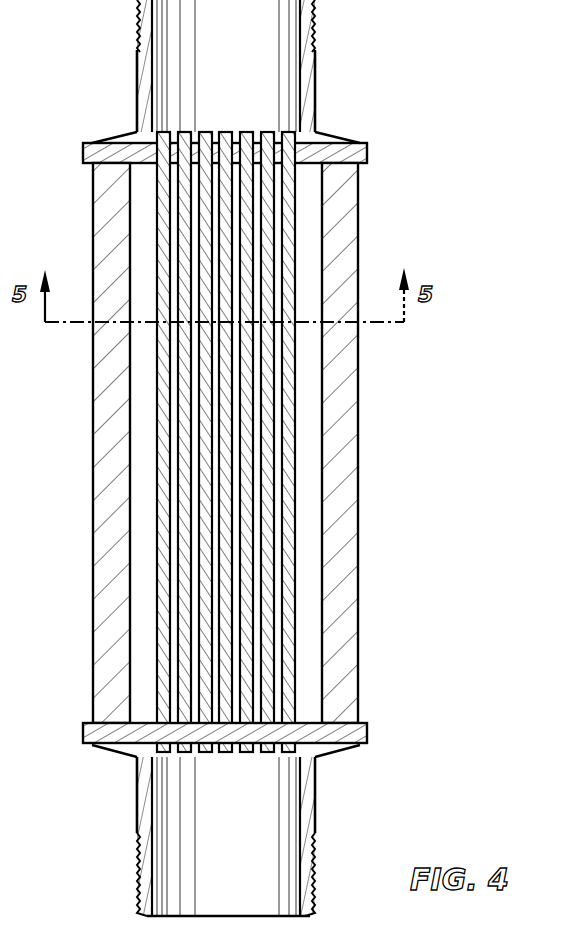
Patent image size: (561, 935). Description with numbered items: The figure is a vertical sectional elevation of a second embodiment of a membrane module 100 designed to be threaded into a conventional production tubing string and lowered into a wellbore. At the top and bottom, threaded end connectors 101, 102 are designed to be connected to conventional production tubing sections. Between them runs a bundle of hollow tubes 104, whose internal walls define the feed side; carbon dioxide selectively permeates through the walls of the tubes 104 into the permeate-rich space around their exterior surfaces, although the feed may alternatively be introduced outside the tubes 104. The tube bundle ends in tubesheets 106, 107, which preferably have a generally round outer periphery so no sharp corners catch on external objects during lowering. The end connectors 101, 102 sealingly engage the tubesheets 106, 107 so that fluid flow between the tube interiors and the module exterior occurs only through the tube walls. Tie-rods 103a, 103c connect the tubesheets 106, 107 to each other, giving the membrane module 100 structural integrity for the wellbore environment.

The membrane module 100 is at (410, 191).
The threaded end connector 101 is at (315, 66).
The threaded end connector 102 is at (315, 815).
The tie-rod 103a is at (358, 480).
The tie-rod 103c is at (93, 483).
The tubes 104 is at (200, 576).
The tubesheet 106 is at (357, 150).
The tubesheet 107 is at (355, 742).